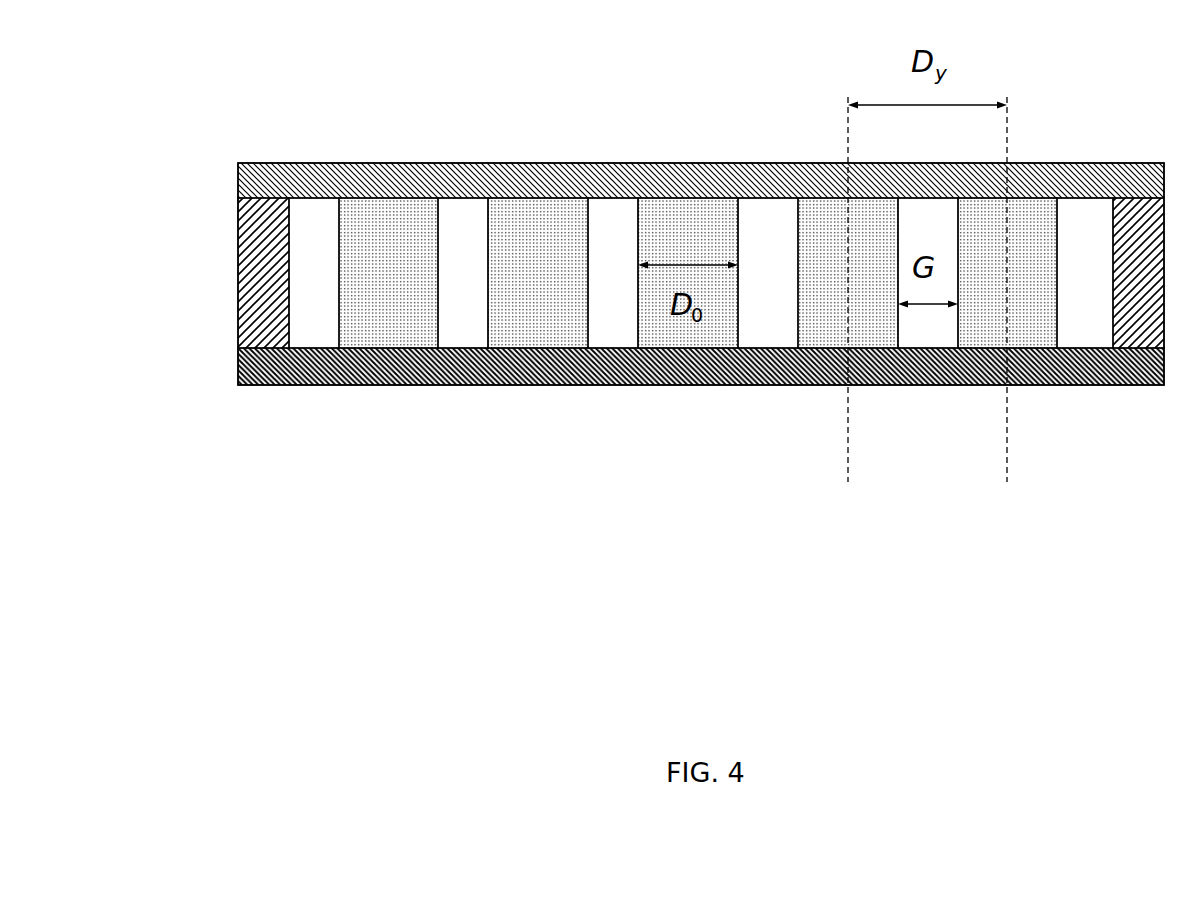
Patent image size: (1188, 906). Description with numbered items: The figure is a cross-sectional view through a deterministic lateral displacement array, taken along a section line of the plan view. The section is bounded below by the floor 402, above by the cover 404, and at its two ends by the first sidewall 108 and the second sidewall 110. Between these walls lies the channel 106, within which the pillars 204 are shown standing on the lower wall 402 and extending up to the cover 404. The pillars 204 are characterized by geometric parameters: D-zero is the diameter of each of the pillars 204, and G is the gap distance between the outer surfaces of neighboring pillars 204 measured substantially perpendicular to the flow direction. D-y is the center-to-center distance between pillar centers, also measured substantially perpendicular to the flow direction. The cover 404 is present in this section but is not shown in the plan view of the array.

The first sidewall 108 is at (263, 232).
The second sidewall 110 is at (1139, 247).
The pillars 204 is at (389, 247).
The channel 106 is at (464, 323).
The cover 404 is at (700, 180).
The floor 402 is at (748, 372).